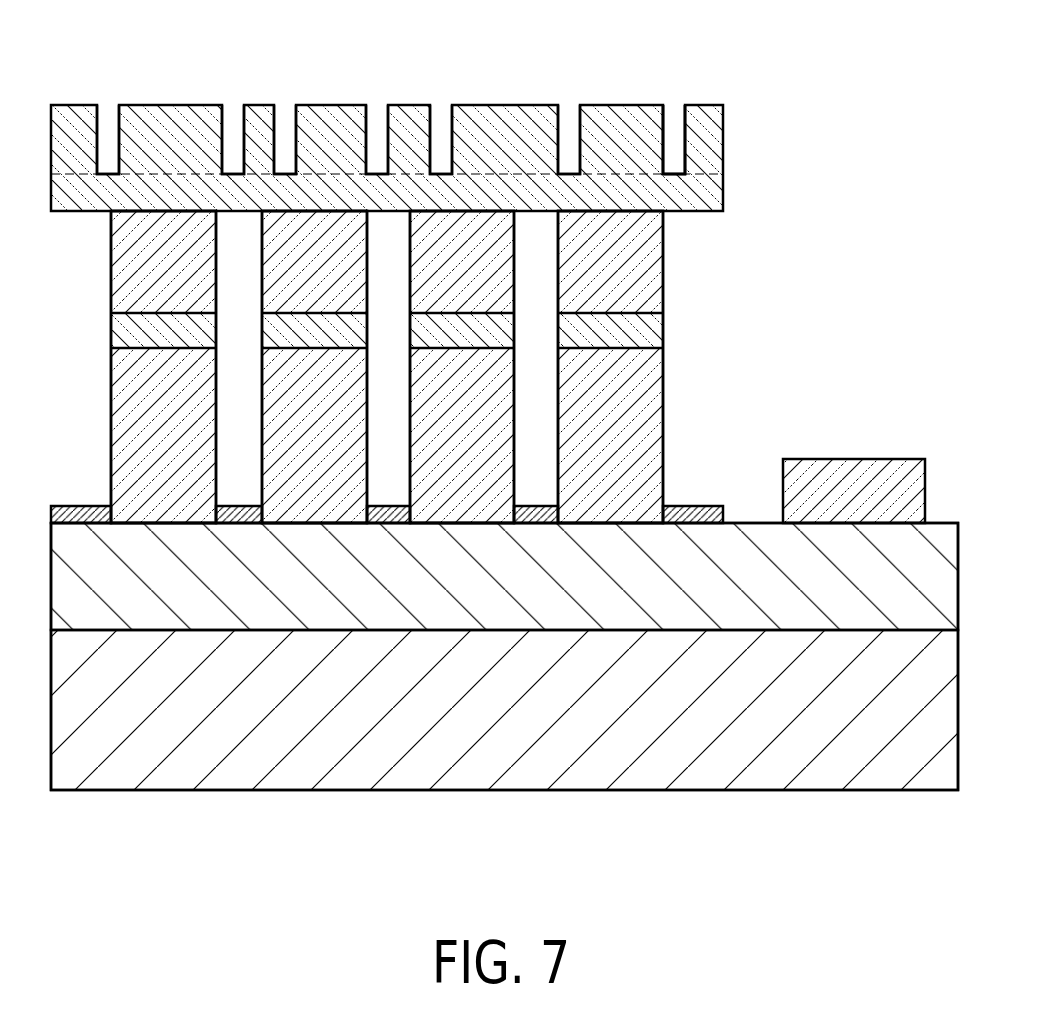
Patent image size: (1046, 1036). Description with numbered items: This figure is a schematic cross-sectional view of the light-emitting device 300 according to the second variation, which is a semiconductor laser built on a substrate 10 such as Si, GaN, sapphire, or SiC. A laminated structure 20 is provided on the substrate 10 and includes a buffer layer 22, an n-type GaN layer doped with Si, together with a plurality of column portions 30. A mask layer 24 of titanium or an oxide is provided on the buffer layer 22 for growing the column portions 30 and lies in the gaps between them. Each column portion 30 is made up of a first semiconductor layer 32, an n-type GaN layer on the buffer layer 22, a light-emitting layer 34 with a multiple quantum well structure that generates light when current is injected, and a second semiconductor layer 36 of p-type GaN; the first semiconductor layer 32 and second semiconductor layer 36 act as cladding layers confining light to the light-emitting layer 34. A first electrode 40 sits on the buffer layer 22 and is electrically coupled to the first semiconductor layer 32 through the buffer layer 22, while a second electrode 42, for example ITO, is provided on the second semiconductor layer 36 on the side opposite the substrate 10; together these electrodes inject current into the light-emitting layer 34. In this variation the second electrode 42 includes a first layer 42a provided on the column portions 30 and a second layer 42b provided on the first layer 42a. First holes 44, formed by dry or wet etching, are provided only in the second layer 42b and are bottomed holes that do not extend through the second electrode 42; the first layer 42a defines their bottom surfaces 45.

The light-emitting device 300 is at (825, 104).
The substrate 10 is at (363, 715).
The buffer layer 22 is at (460, 590).
The mask layer 24 is at (690, 508).
The laminated structure 20 is at (91, 270).
The column portion 30 is at (163, 260).
The first semiconductor layer 32 is at (643, 383).
The light-emitting layer 34 is at (643, 338).
The second semiconductor layer 36 is at (643, 283).
The first electrode 40 is at (873, 485).
The second electrode 42 is at (828, 150).
The first layer 42a is at (692, 198).
The second layer 42b is at (708, 158).
The first holes 44 is at (108, 135).
The bottom surfaces 45 is at (672, 168).